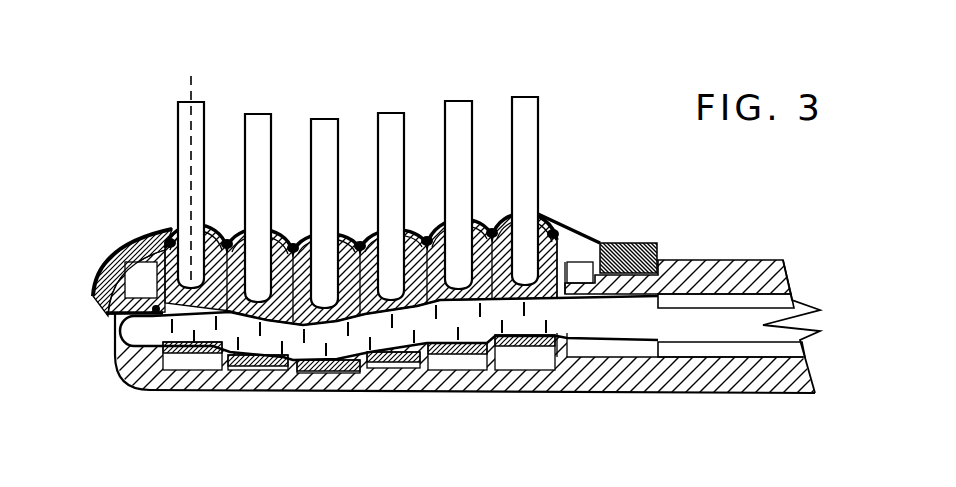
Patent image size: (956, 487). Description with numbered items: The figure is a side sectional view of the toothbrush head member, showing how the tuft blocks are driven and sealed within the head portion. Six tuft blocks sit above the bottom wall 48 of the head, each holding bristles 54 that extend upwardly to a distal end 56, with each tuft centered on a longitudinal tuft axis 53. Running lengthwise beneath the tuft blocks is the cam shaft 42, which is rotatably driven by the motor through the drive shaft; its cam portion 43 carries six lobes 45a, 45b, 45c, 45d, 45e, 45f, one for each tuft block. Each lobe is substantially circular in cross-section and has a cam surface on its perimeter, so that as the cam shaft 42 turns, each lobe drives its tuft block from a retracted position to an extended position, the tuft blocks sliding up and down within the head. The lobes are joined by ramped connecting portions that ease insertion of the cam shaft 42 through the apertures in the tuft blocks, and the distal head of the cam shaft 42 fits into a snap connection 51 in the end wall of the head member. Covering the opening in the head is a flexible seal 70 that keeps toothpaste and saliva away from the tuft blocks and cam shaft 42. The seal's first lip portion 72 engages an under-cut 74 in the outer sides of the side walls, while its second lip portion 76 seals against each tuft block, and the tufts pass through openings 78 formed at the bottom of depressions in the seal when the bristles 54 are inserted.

The cam shaft 42 is at (693, 328).
The cam portion 43 is at (225, 333).
The lobe 45a is at (188, 328).
The lobe 45b is at (257, 333).
The lobe 45c is at (325, 342).
The lobe 45d is at (388, 335).
The lobe 45e is at (463, 327).
The lobe 45f is at (530, 320).
The bottom wall 48 is at (357, 378).
The snap connection 51 is at (138, 380).
The longitudinal tuft axis 53 is at (192, 80).
The bristles 54 is at (388, 177).
The distal end 56 is at (390, 112).
The flexible seal 70 is at (133, 242).
The first lip portion 72 is at (104, 314).
The under-cut 74 is at (98, 287).
The second lip portion 76 is at (168, 228).
The openings 78 is at (227, 237).